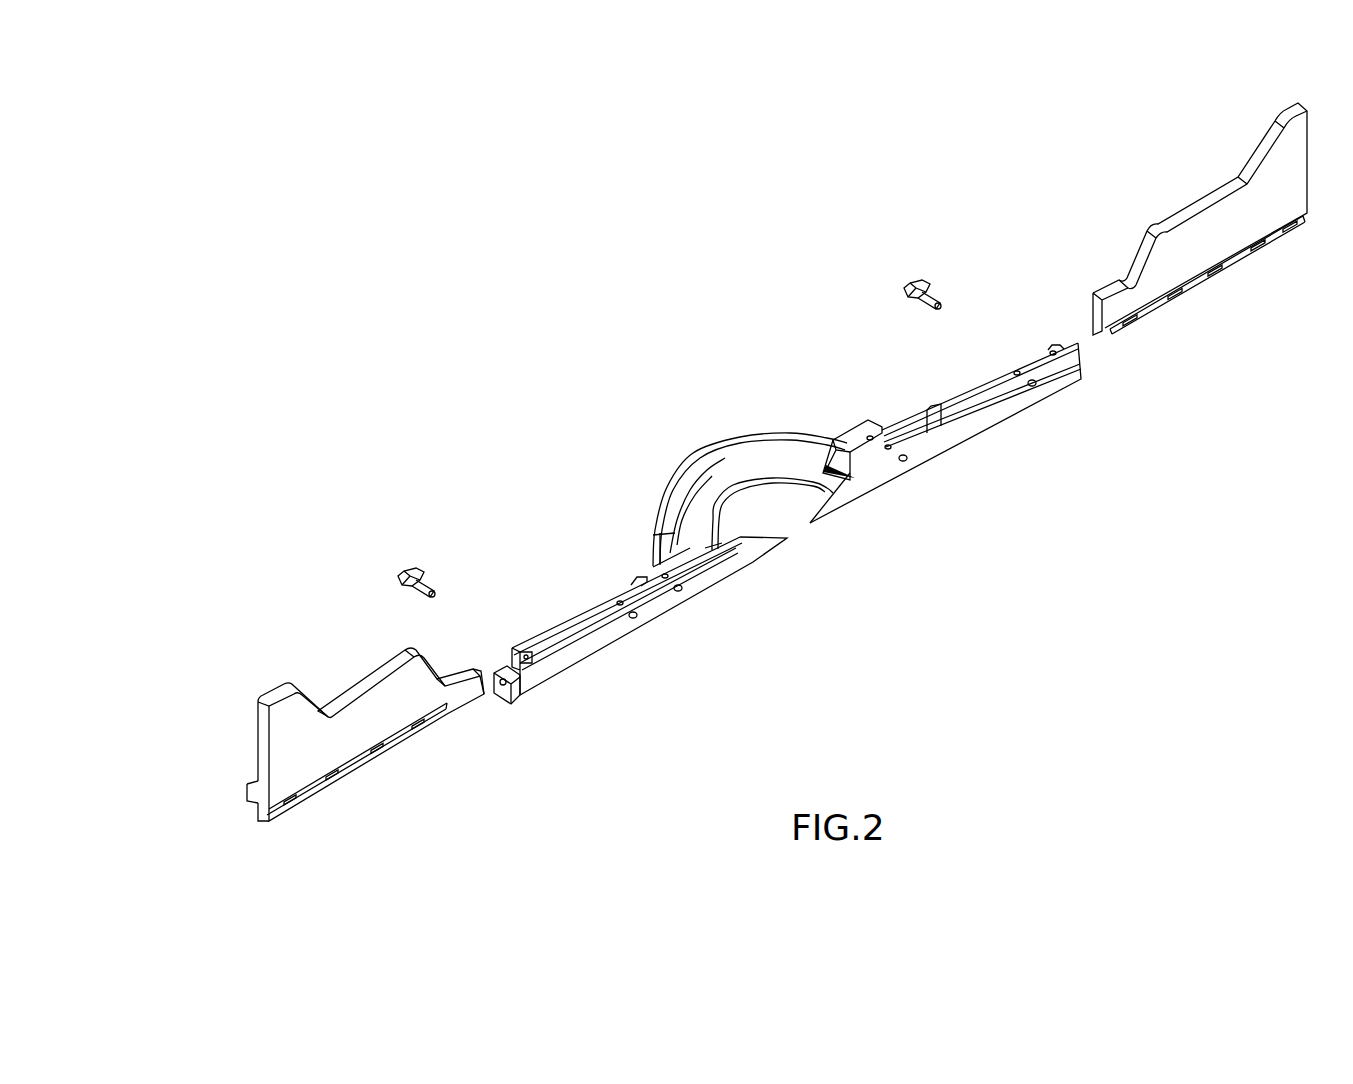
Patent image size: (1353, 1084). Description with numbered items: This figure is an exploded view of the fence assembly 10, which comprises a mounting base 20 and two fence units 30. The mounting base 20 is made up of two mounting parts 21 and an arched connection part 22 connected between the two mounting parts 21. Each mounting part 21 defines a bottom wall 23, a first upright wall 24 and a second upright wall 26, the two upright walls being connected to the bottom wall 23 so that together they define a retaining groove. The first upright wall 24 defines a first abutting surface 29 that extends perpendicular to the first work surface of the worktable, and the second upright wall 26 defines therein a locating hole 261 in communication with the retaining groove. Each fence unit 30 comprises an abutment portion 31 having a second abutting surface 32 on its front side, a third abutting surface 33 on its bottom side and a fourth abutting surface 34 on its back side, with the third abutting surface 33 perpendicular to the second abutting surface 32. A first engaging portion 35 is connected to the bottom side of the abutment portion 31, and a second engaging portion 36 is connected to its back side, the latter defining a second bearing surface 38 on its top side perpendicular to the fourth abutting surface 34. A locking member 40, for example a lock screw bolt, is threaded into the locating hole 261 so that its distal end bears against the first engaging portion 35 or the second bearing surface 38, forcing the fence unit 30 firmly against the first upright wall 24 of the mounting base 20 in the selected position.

The fence assembly 10 is at (601, 308).
The mounting base 20 is at (961, 553).
The mounting part 21 is at (725, 595).
The arched connection part 22 is at (738, 473).
The bottom wall 23 is at (501, 688).
The first upright wall 24 is at (540, 656).
The second upright wall 26 is at (532, 640).
The locating hole 261 is at (530, 665).
The first abutting surface 29 is at (593, 640).
The fence unit 30 is at (296, 637).
The abutment portion 31 is at (276, 698).
The second abutting surface 32 is at (355, 735).
The third abutting surface 33 is at (272, 821).
The fourth abutting surface 34 is at (258, 752).
The first engaging portion 35 is at (258, 812).
The second engaging portion 36 is at (247, 794).
The second bearing surface 38 is at (253, 785).
The locking member 40 is at (410, 569).